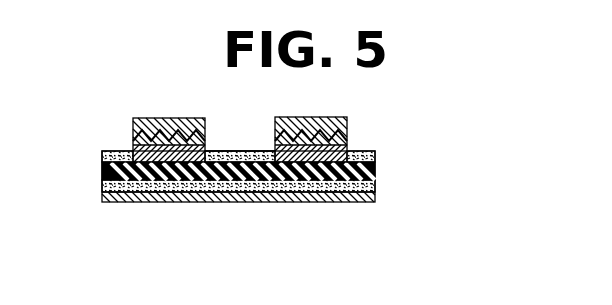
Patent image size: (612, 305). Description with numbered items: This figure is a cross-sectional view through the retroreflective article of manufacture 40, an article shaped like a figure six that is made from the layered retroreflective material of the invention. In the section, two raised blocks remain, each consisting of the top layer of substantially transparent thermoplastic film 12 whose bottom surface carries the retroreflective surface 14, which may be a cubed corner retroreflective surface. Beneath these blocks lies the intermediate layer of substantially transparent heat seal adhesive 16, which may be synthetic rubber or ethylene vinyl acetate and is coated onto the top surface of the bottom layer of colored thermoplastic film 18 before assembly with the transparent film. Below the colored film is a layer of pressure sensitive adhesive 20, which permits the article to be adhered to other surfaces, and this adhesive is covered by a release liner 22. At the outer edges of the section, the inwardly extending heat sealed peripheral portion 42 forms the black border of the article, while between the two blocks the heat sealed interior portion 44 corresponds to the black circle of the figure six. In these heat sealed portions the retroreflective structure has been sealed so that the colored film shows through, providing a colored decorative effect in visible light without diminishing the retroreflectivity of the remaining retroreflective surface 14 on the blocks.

The retroreflective article of manufacture 40 is at (164, 94).
The substantially transparent thermoplastic film 12 is at (140, 118).
The retroreflective surface 14 is at (133, 147).
The substantially transparent heat seal adhesive 16 is at (103, 151).
The heat sealed peripheral portion 42 is at (102, 152).
The heat sealed interior portion 44 is at (252, 125).
The colored thermoplastic film 18 is at (375, 168).
The pressure sensitive adhesive 20 is at (102, 184).
The release liner 22 is at (112, 200).